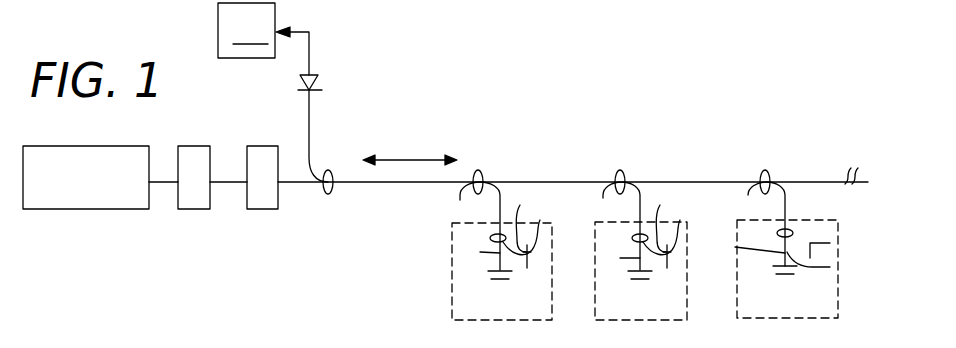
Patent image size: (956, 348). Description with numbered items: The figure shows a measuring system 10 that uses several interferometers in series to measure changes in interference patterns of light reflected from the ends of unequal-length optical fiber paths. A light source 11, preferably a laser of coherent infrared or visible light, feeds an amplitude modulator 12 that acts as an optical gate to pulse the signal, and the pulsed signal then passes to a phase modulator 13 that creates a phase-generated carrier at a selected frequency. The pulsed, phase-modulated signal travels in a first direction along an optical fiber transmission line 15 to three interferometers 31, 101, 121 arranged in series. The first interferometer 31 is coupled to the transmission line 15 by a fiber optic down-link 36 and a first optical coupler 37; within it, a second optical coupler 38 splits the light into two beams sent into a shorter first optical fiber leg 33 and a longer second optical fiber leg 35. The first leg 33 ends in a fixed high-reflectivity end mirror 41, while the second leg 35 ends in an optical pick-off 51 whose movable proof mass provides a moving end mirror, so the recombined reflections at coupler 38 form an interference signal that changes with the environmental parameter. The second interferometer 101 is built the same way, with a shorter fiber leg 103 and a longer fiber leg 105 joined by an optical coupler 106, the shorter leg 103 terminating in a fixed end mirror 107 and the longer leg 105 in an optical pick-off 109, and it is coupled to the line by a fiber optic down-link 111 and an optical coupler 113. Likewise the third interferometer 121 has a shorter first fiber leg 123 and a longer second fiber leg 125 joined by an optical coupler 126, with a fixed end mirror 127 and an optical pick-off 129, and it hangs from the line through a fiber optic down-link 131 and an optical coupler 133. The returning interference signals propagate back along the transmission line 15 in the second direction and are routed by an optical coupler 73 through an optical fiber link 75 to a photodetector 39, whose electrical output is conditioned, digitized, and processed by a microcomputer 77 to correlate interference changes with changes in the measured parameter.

The measuring system 10 is at (550, 63).
The light source 11 is at (93, 146).
The amplitude modulator 12 is at (200, 146).
The phase modulator 13 is at (262, 209).
The optical fiber transmission line 15 is at (376, 183).
The optical coupler 73 is at (328, 195).
The optical fiber link 75 is at (312, 113).
The photodetector 39 is at (318, 80).
The microcomputer 77 is at (254, 30).
The second interferometer 101 is at (455, 276).
The optical coupler 113 is at (478, 170).
The fiber optic down-link 111 is at (500, 207).
The optical pick-off 109 is at (506, 282).
The optical coupler 106 is at (490, 238).
The fiber leg 105 is at (482, 253).
The fiber leg 103 is at (530, 225).
The fixed end mirror 107 is at (541, 227).
The third interferometer 121 is at (594, 290).
The optical coupler 133 is at (620, 171).
The fiber optic down-link 131 is at (639, 202).
The optical pick-off 129 is at (646, 282).
The optical coupler 126 is at (632, 238).
The second fiber leg 125 is at (622, 258).
The first fiber leg 123 is at (673, 226).
The fixed end mirror 127 is at (679, 227).
The first interferometer 31 is at (838, 221).
The first optical coupler 37 is at (766, 170).
The fiber optic down-link 36 is at (790, 195).
The optical pick-off 51 is at (792, 277).
The second optical coupler 38 is at (792, 230).
The second optical fiber leg 35 is at (735, 247).
The end mirror 41 is at (830, 243).
The first optical fiber leg 33 is at (830, 267).